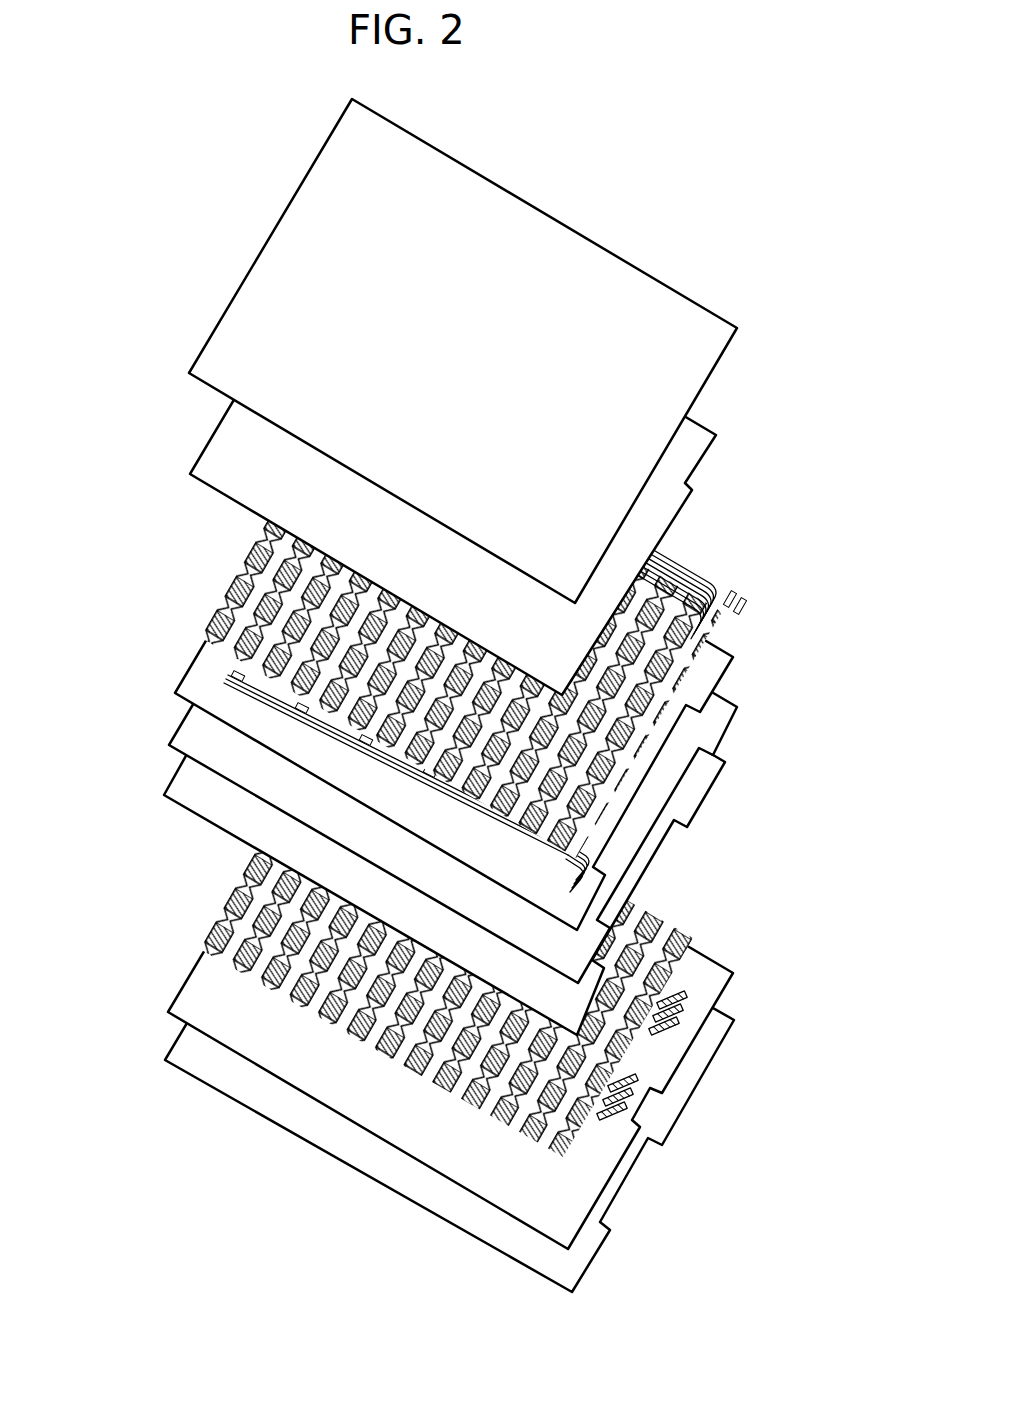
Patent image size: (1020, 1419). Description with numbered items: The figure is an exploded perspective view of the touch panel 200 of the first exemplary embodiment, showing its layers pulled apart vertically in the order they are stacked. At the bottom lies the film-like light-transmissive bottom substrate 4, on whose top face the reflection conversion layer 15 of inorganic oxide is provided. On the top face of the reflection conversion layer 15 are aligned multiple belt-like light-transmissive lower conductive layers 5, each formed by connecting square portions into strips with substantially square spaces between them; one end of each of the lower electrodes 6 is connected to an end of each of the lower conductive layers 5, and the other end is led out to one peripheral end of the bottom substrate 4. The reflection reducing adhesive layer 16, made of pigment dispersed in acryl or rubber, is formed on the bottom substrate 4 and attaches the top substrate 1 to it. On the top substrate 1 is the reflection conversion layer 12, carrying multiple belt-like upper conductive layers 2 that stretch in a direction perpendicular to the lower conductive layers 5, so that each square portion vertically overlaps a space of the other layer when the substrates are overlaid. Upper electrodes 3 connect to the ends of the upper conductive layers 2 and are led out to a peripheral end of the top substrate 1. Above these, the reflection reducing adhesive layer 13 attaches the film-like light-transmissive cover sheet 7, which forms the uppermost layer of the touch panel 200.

The touch panel 200 is at (620, 190).
The cover sheet 7 is at (657, 280).
The reflection reducing adhesive layer 13 is at (213, 430).
The upper conductive layers 2 is at (220, 617).
The upper electrodes 3 is at (730, 588).
The reflection conversion layer 12 is at (735, 660).
The top substrate 1 is at (728, 730).
The reflection reducing adhesive layer 16 is at (200, 810).
The lower conductive layers 5 is at (253, 972).
The reflection conversion layer 15 is at (705, 958).
The lower electrodes 6 is at (650, 1090).
The bottom substrate 4 is at (305, 1150).